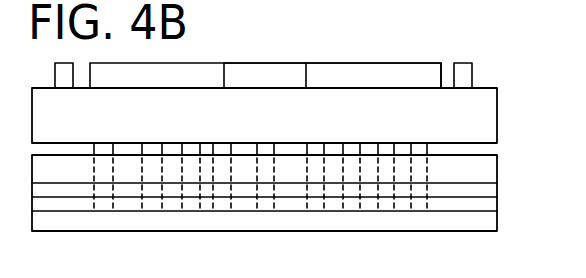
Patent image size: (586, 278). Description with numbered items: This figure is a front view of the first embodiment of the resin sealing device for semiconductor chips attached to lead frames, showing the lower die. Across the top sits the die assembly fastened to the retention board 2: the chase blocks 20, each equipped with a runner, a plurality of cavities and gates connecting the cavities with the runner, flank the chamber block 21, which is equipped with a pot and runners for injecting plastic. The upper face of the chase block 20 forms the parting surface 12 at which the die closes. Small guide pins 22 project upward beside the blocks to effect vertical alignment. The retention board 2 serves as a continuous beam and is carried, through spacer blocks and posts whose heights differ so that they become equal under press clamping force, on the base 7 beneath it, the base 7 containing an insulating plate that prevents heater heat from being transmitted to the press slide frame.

The retention board 2 is at (497, 118).
The base 7 is at (497, 217).
The parting surface 12 is at (406, 63).
The chase block 20 is at (347, 70).
The chamber block 21 is at (252, 72).
The guide pin 22 is at (463, 63).